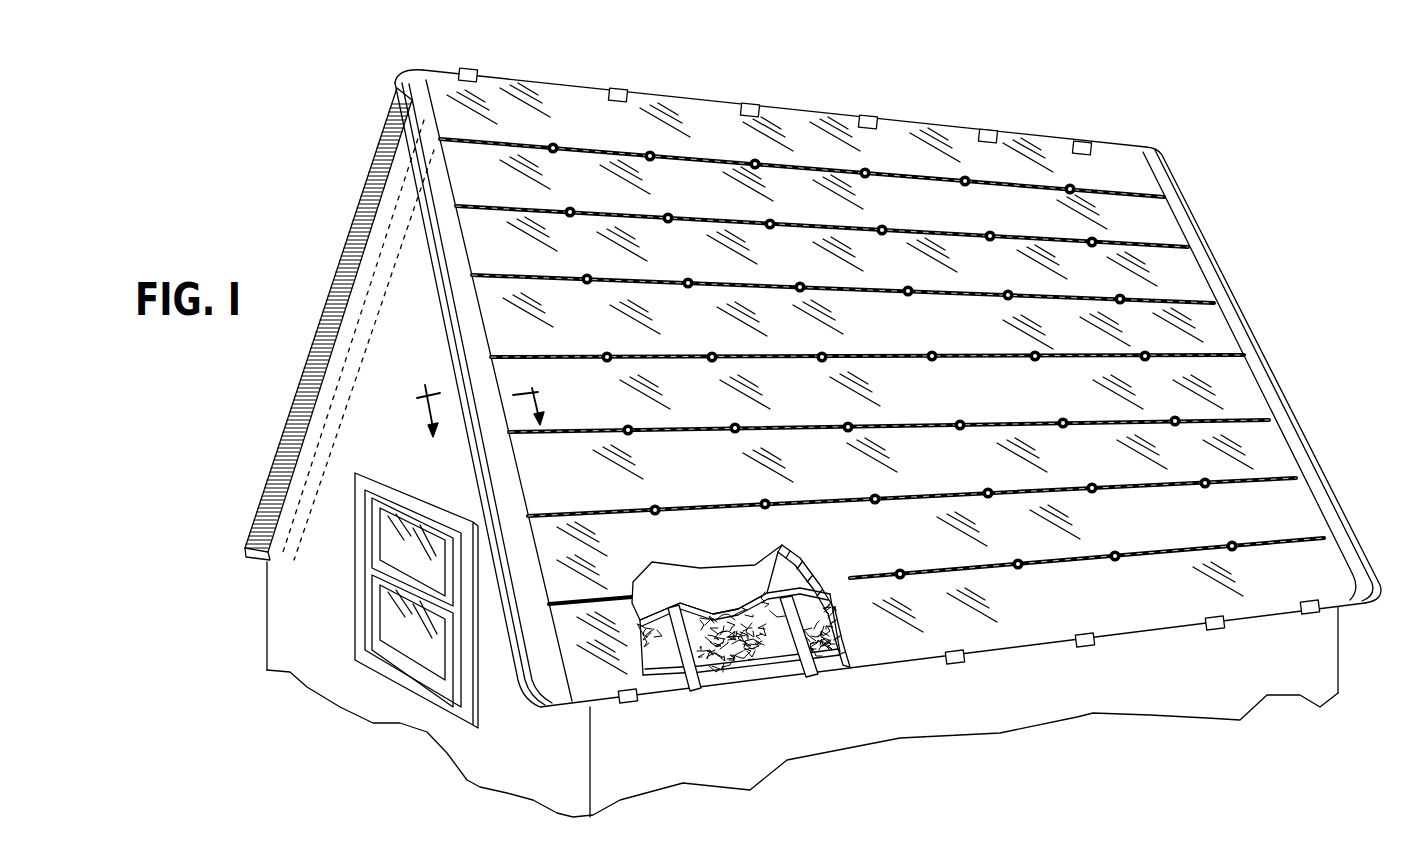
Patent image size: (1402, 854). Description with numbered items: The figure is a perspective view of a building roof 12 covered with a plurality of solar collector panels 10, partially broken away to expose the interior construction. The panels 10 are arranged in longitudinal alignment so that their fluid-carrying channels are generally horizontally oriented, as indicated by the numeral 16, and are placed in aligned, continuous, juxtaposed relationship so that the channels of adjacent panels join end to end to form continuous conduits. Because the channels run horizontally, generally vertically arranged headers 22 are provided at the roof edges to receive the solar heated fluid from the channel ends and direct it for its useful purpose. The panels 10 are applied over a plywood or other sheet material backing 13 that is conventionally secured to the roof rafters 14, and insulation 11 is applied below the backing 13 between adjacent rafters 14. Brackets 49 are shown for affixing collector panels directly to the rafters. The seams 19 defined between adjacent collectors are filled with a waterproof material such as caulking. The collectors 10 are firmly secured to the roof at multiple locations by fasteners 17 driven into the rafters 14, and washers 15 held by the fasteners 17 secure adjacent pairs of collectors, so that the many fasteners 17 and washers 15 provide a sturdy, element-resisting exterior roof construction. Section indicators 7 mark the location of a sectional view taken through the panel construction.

The section line 7- 7 is at (479, 396).
The solar collector panels 10 is at (788, 107).
The insulation 11 is at (775, 648).
The roof 12 is at (752, 674).
The sheet material backing 13 is at (723, 578).
The roof rafters 14 is at (697, 690).
The washers 15 is at (556, 147).
The horizontally oriented channels 16 is at (500, 95).
The fasteners 17 is at (553, 148).
The seams 19 is at (958, 232).
The vertically arranged headers 22 is at (1197, 237).
The brackets 49 is at (469, 70).